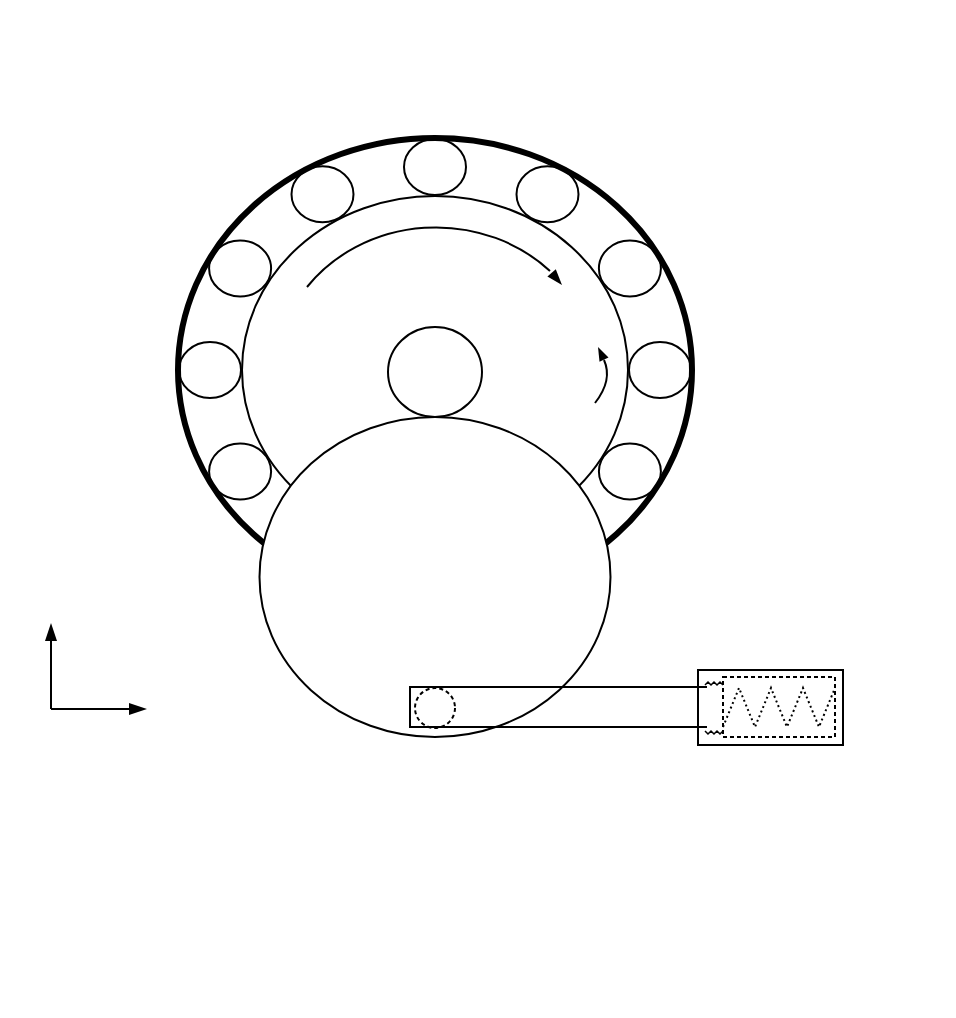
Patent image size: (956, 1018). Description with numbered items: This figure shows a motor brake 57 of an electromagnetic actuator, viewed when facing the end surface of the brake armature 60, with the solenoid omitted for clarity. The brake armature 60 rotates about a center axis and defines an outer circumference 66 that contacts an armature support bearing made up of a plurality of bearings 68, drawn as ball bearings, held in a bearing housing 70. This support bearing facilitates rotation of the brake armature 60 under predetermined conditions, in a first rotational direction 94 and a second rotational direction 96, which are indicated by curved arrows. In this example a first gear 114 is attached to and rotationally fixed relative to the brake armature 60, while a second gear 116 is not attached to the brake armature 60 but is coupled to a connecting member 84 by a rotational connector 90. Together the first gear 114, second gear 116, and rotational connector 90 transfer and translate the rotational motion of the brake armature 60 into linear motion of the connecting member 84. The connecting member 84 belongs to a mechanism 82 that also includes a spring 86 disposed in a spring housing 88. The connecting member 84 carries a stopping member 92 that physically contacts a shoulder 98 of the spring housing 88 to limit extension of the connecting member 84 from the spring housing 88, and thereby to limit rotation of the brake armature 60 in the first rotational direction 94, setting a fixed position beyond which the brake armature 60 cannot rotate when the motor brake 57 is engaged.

The motor brake 57 is at (172, 58).
The brake armature 60 is at (305, 267).
The outer circumference 66 is at (383, 202).
The bearings 68 is at (447, 160).
The bearing housing 70 is at (632, 213).
The first rotational direction 94 is at (368, 240).
The second rotational direction 96 is at (598, 376).
The first gear 114 is at (388, 378).
The second gear 116 is at (265, 614).
The mechanism 82 is at (700, 632).
The connecting member 84 is at (657, 707).
The spring 86 is at (758, 713).
The spring housing 88 is at (813, 670).
The rotational connector 90 is at (447, 700).
The stopping member 92 is at (723, 683).
The shoulder 98 is at (704, 686).